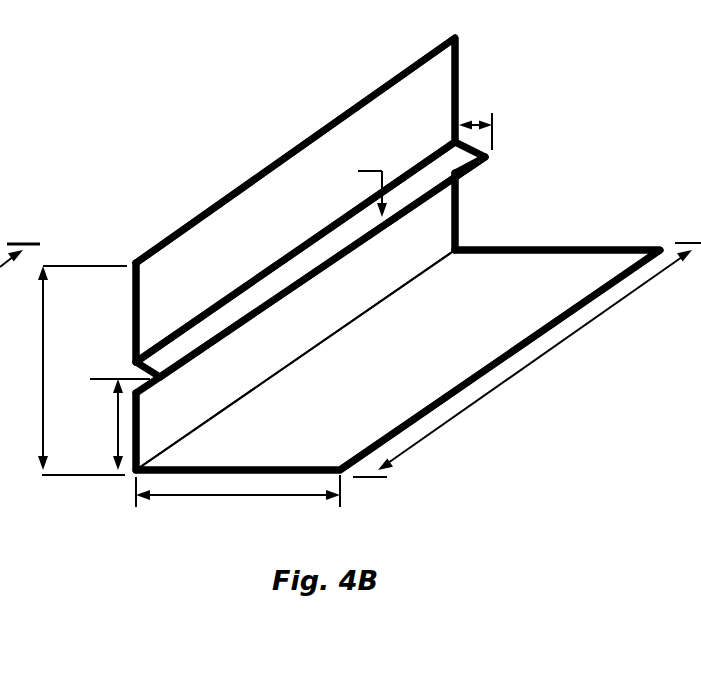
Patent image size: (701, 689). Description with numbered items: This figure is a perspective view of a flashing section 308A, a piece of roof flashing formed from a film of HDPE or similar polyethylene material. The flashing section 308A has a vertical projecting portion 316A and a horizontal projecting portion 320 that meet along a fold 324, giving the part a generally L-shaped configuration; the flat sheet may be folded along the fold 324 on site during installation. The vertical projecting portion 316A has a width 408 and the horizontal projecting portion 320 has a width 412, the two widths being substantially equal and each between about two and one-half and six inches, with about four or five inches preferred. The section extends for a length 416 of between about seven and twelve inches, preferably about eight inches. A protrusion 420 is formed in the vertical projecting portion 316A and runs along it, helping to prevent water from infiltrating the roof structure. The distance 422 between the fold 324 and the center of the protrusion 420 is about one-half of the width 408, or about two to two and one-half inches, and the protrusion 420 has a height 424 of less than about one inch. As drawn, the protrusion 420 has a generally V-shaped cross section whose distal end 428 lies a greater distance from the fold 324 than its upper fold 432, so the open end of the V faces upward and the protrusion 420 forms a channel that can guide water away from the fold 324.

The flashing section 308A is at (215, 129).
The vertical projecting portion 316A is at (438, 80).
The horizontal projecting portion 320 is at (543, 262).
The fold 324 is at (367, 314).
The width of the vertical projecting portion 408 is at (50, 342).
The width of the horizontal projecting portion 412 is at (262, 498).
The length 416 is at (553, 347).
The protrusion 420 is at (350, 189).
The distance 422 is at (110, 421).
The height of the protrusion 424 is at (478, 118).
The distal end of the protrusion 428 is at (265, 312).
The upper fold of the protrusion 432 is at (244, 283).